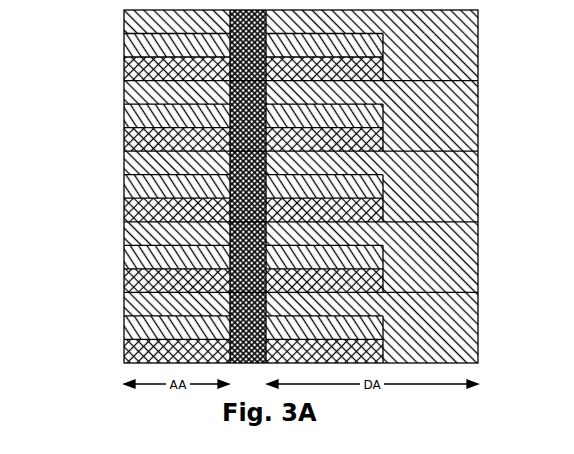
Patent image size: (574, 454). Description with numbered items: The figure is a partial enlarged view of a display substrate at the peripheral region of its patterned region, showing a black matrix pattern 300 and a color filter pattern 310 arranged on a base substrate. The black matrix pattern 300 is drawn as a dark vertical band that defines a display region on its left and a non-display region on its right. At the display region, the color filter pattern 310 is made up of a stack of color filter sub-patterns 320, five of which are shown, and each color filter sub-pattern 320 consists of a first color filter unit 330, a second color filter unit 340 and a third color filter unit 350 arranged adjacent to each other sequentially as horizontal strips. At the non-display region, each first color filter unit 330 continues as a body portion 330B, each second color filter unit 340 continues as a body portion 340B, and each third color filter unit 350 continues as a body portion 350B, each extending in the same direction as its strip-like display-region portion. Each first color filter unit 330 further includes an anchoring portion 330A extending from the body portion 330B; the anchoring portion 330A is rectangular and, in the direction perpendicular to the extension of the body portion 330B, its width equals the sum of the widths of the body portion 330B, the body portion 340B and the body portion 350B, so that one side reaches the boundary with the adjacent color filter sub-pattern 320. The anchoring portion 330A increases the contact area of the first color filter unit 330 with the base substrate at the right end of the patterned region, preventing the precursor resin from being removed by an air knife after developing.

The black matrix pattern 300 is at (248, 186).
The color filter pattern 310 is at (243, 186).
The color filter sub-pattern 320 is at (266, 186).
The first color filter unit 330 is at (285, 163).
The second color filter unit 340 is at (237, 187).
The third color filter unit 350 is at (237, 210).
The anchoring portion 330A is at (430, 199).
The body portion 330B is at (323, 20).
The body portion 340B is at (323, 44).
The body portion 350B is at (323, 67).